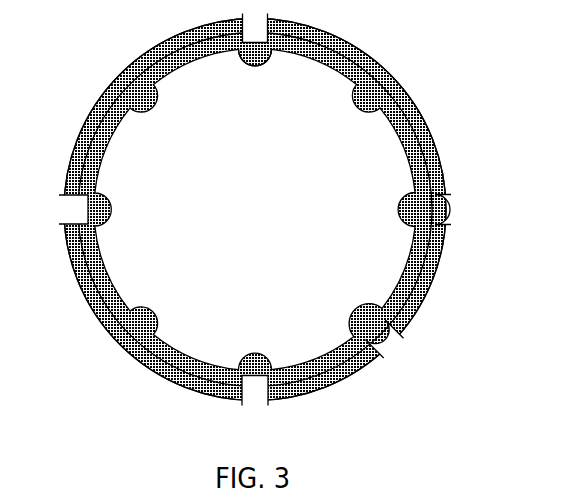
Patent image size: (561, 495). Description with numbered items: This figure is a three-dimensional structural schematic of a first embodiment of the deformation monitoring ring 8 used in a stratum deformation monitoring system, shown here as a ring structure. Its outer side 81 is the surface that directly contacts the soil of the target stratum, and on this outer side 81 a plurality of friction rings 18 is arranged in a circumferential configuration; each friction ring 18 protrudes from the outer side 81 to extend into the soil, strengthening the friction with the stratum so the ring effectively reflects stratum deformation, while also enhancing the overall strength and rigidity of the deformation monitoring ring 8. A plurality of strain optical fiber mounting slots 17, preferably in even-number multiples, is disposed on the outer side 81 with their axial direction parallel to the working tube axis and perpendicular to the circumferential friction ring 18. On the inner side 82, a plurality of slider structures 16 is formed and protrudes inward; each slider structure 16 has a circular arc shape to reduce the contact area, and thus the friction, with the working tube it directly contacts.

The deformation monitoring ring 8 is at (282, 210).
The slider structure 16 is at (255, 52).
The strain optical fiber mounting slot 17 is at (421, 210).
The friction ring 18 is at (118, 78).
The outer side 81 is at (295, 210).
The inner side 82 is at (110, 152).